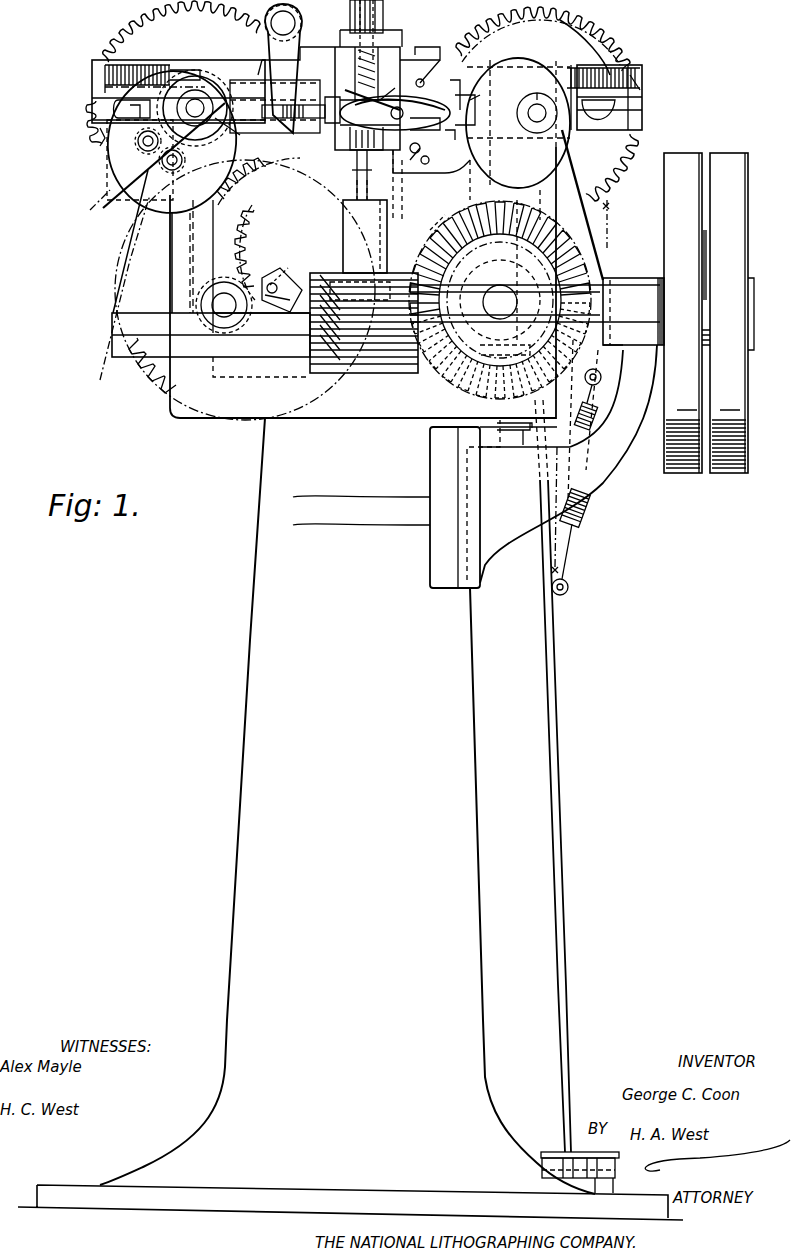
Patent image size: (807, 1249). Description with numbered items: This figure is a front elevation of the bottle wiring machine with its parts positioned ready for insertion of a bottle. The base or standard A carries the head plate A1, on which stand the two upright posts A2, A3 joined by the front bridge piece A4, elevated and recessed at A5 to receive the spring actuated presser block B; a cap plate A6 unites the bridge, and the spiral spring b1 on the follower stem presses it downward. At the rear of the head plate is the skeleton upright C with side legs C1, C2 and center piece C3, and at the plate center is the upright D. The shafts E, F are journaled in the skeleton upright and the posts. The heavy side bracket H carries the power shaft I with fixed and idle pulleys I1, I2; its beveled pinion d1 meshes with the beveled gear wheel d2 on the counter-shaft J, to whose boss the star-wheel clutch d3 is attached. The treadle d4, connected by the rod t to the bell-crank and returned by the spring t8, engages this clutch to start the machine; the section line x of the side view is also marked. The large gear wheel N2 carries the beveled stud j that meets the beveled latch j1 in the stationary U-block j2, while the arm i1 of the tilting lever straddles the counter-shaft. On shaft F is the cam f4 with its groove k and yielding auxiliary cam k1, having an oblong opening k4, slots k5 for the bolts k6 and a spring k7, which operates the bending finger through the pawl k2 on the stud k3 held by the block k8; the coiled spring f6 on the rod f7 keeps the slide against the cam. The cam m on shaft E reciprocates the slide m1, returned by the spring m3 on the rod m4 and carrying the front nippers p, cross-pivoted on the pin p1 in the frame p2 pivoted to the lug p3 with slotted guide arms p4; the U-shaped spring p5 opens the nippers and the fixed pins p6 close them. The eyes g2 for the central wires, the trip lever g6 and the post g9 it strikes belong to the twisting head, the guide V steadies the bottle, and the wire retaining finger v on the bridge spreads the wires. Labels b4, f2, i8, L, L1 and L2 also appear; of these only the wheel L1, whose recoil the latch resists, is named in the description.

The base or standard A is at (350, 819).
The top or head plate A1 is at (239, 362).
The upright post A2 is at (507, 190).
The upright post A3 is at (192, 256).
The front bridge piece A4 is at (336, 98).
The recess of bridge piece A5 is at (420, 45).
The cap plate A6 is at (374, 23).
The presser block B is at (370, 114).
The spiral spring b1 is at (355, 50).
The arm b4 is at (590, 40).
The skeleton upright C is at (363, 239).
The side leg C1 is at (127, 280).
The side leg C2 is at (589, 205).
The center piece C3 is at (407, 185).
The upright D is at (330, 185).
The beveled pinion d1 is at (500, 300).
The beveled gear wheel d2 is at (436, 219).
The clutch d3 is at (500, 297).
The treadle d4 is at (553, 1152).
The shaft E is at (518, 123).
The shaft F is at (200, 100).
The spring housing f2 is at (92, 112).
The cam f4 is at (100, 150).
The coiled spring f6 is at (140, 65).
The rod f7 is at (175, 68).
The eyes g2 is at (356, 162).
The trip lever g6 is at (355, 182).
The post g9 is at (365, 226).
The side bracket H is at (543, 466).
The power shaft I is at (560, 350).
The fixed pulley I1 is at (683, 313).
The idle pulley I2 is at (732, 313).
The lever arm i1 is at (525, 430).
The spring i8 is at (491, 347).
The counter-shaft J is at (500, 300).
The beveled stud j is at (253, 266).
The beveled latch j1 is at (281, 268).
The U-block j2 is at (279, 301).
The groove k is at (293, 8).
The auxiliary cam k1 is at (167, 142).
The pawl k2 is at (275, 98).
The stud k3 is at (226, 127).
The oblong opening k4 is at (138, 113).
The slots k5 is at (138, 145).
The bolts k6 is at (161, 146).
The spring k7 is at (290, 118).
The block k8 is at (262, 58).
The gear L is at (148, 366).
The wheel L1 is at (173, 72).
The gear L2 is at (547, 103).
The cam m is at (470, 101).
The slide m1 is at (619, 97).
The spring m3 is at (622, 72).
The rod m4 is at (635, 77).
The large gear wheel N2 is at (255, 252).
The front nippers p is at (395, 109).
The pin p1 is at (425, 119).
The frame p2 is at (452, 89).
The lug p3 is at (458, 134).
The arms p4 is at (427, 117).
The U-shaped spring p5 is at (425, 96).
The fixed pins p6 is at (418, 104).
The rod t is at (553, 776).
The spring t8 is at (587, 506).
The guide V is at (364, 334).
The wire retaining finger v is at (359, 30).
The section line x is at (578, 386).